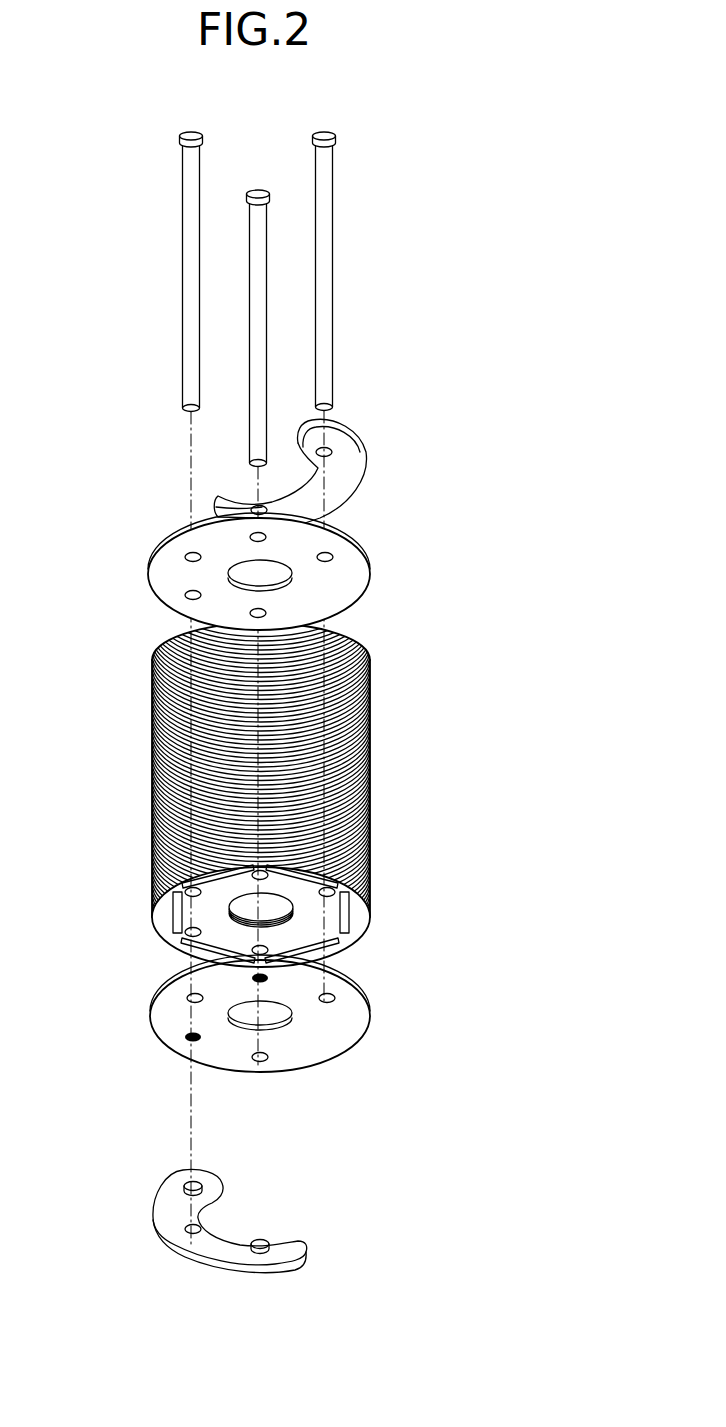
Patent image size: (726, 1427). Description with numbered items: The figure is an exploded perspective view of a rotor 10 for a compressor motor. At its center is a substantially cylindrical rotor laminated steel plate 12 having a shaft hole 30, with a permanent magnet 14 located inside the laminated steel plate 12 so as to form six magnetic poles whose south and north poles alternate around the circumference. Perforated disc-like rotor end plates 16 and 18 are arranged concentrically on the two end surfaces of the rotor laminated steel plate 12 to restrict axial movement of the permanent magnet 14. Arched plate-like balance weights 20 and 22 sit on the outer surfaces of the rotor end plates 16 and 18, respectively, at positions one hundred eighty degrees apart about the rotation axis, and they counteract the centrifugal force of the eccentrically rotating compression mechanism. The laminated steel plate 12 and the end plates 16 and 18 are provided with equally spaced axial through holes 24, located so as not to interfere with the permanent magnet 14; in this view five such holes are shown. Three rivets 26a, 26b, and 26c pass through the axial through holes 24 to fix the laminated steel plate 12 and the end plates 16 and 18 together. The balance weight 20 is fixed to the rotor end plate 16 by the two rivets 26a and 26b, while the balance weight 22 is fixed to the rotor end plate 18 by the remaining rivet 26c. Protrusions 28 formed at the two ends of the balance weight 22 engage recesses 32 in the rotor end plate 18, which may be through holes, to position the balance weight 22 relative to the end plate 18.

The rotor 10 is at (432, 149).
The rotor laminated steel plate 12 is at (389, 740).
The permanent magnet 14 is at (192, 872).
The rotor end plate 16 is at (366, 548).
The rotor end plate 18 is at (152, 1030).
The balance weight 20 is at (368, 440).
The balance weight 22 is at (167, 1230).
The axial through holes 24 is at (331, 449).
The rivet 26a is at (325, 278).
The rivet 26b is at (258, 345).
The rivet 26c is at (191, 287).
The protrusions 28 is at (197, 1184).
The shaft hole 30 is at (271, 1017).
The recesses 32 is at (254, 985).